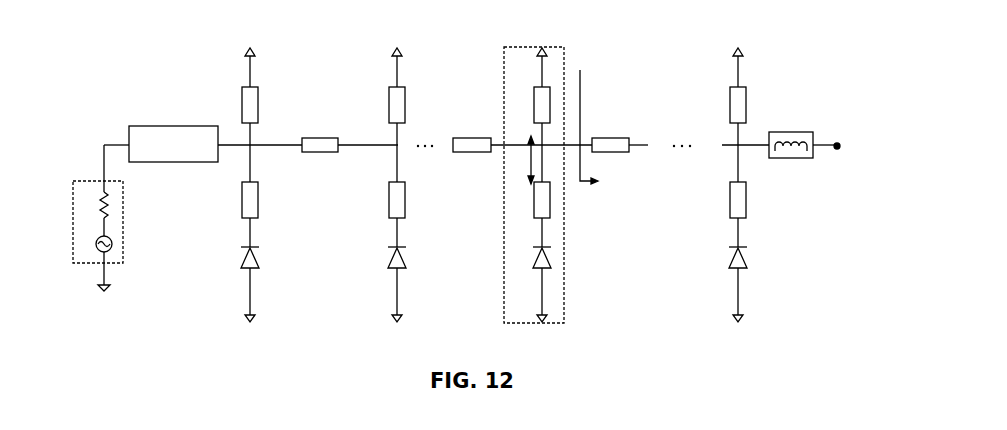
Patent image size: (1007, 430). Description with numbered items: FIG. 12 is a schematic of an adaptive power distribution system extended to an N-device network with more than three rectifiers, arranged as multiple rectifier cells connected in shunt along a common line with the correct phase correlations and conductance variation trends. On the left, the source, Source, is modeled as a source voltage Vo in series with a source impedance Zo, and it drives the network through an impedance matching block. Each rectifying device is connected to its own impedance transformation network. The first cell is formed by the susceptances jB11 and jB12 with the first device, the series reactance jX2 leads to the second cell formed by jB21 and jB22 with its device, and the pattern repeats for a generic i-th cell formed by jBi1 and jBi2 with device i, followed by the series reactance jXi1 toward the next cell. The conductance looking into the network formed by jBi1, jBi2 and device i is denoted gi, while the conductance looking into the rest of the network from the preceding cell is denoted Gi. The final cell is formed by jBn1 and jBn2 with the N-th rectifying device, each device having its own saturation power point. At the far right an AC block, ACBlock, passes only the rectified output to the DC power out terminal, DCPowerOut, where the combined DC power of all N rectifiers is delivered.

The source Source is at (120, 218).
The source impedance Zo is at (87, 206).
The source voltage Vo is at (87, 246).
The shunt susceptance jB11 is at (237, 115).
The shunt susceptance jB12 is at (238, 252).
The series reactance jX2 is at (320, 154).
The shunt susceptance jB21 is at (385, 115).
The shunt susceptance jB22 is at (385, 252).
The shunt susceptance jBi1 is at (531, 115).
The shunt susceptance jBi2 is at (531, 252).
The conductance gi is at (530, 162).
The conductance Gi is at (592, 123).
The series reactance jXi+1 jXi1 is at (610, 154).
The shunt susceptance jBn1 is at (724, 115).
The shunt susceptance jBn2 is at (724, 252).
The AC block ACBlock is at (791, 139).
The DC power out DCPowerOut is at (863, 146).